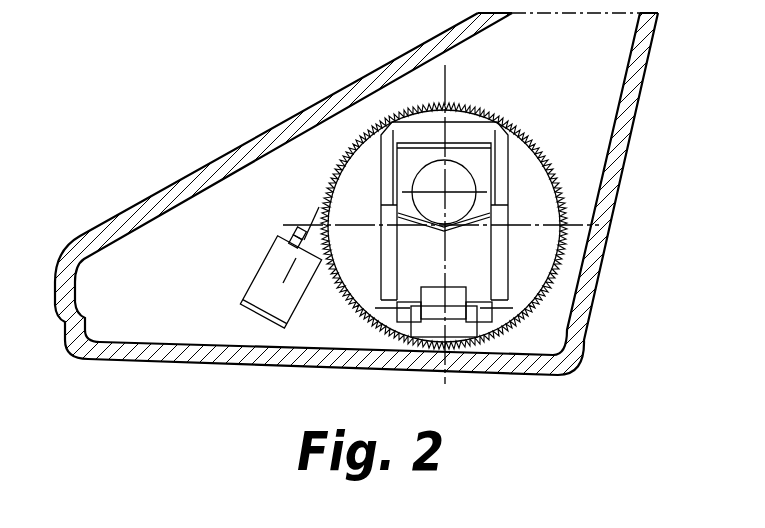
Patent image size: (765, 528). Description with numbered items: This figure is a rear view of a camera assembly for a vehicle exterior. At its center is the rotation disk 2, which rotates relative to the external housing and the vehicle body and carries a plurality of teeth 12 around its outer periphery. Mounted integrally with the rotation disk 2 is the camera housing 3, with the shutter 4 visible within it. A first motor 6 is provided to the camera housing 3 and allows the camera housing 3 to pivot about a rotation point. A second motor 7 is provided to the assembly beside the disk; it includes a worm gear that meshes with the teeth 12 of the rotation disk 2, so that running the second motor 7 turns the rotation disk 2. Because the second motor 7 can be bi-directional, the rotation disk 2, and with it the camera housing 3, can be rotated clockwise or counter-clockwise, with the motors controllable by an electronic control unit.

The rotation disk 2 is at (539, 270).
The camera housing 3 is at (474, 263).
The shutter 4 is at (474, 181).
The first motor 6 is at (453, 305).
The second motor 7 is at (259, 317).
The teeth 12 is at (347, 138).